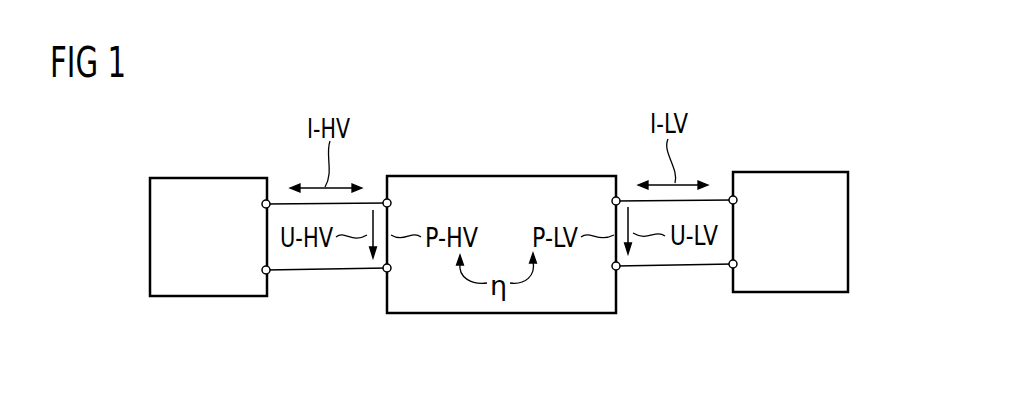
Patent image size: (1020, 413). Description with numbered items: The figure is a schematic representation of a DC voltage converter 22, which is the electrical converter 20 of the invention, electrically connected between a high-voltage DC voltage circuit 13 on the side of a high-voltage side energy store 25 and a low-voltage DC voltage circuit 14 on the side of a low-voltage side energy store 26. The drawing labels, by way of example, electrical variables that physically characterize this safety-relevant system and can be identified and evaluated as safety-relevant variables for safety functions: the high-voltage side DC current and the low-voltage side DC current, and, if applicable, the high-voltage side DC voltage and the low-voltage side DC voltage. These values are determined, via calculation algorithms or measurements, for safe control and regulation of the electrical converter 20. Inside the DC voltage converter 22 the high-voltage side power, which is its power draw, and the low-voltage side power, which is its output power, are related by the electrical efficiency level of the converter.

The high-voltage DC voltage circuit 13 is at (277, 200).
The low-voltage DC voltage circuit 14 is at (724, 196).
The electrical converter 20 is at (501, 205).
The DC voltage converter 22 is at (504, 176).
The high-voltage side energy store 25 is at (206, 177).
The low-voltage side energy store 26 is at (795, 172).